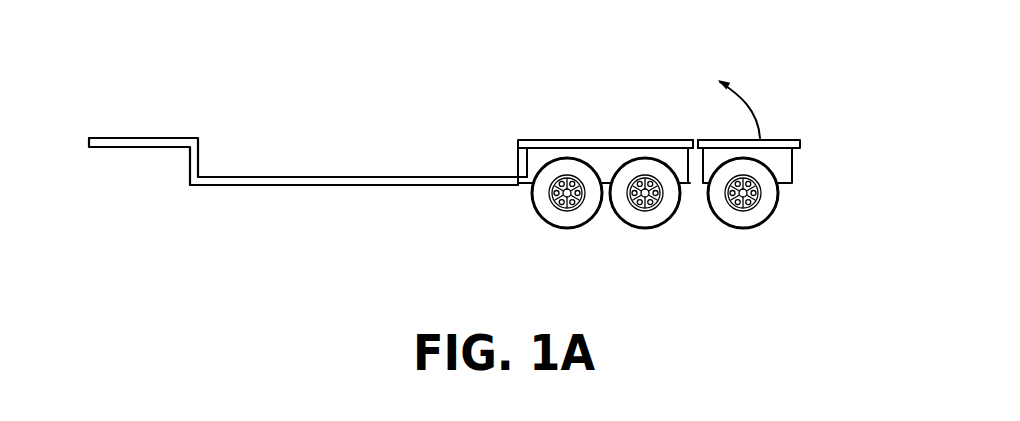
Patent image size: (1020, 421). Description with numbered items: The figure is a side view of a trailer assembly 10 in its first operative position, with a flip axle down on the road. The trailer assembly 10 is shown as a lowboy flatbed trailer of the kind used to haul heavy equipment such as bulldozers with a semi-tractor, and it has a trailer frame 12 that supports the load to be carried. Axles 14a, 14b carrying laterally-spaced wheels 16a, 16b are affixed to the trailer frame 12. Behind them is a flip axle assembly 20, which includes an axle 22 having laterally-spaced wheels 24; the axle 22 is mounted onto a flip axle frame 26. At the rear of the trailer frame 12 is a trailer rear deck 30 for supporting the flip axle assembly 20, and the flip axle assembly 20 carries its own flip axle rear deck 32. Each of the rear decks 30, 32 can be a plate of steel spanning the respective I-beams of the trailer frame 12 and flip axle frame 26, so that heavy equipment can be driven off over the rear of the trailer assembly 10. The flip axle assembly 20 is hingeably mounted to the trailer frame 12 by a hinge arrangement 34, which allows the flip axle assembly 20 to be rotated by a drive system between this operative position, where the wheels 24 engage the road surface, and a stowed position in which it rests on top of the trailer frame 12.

The trailer assembly 10 is at (430, 121).
The trailer frame 12 is at (562, 148).
The axle 14a is at (528, 219).
The axle 14b is at (682, 212).
The wheel 16a is at (578, 228).
The wheel 16b is at (655, 224).
The flip axle assembly 20 is at (852, 105).
The axle 22 is at (797, 206).
The wheel 24 is at (752, 228).
The flip axle frame 26 is at (782, 167).
The trailer rear deck 30 is at (592, 140).
The flip axle rear deck 32 is at (790, 140).
The hinge arrangement 34 is at (695, 140).